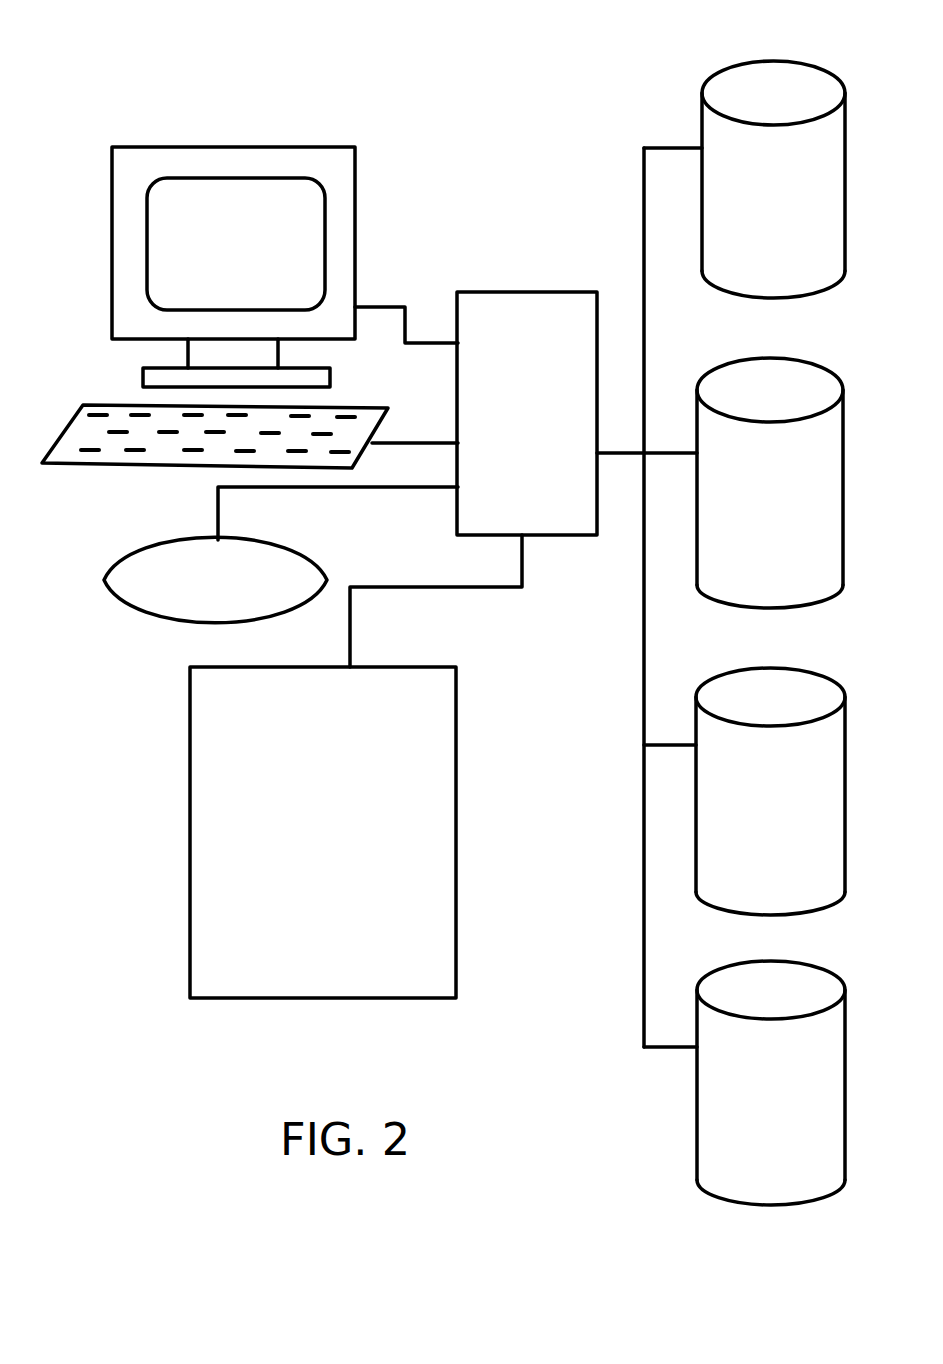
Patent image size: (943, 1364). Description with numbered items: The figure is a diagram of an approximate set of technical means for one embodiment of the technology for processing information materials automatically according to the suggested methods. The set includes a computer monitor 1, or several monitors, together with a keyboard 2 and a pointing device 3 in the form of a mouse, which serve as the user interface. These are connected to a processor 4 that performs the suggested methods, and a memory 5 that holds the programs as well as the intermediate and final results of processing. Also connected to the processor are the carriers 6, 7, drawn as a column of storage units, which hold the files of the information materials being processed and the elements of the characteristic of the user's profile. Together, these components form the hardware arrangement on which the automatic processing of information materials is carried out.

The computer monitor 1 is at (362, 143).
The keyboard 2 is at (82, 403).
The pointing device 3 is at (318, 560).
The processor 4 is at (530, 278).
The memory 5 is at (465, 663).
The carrier 6 is at (750, 57).
The carrier 7 is at (688, 1148).